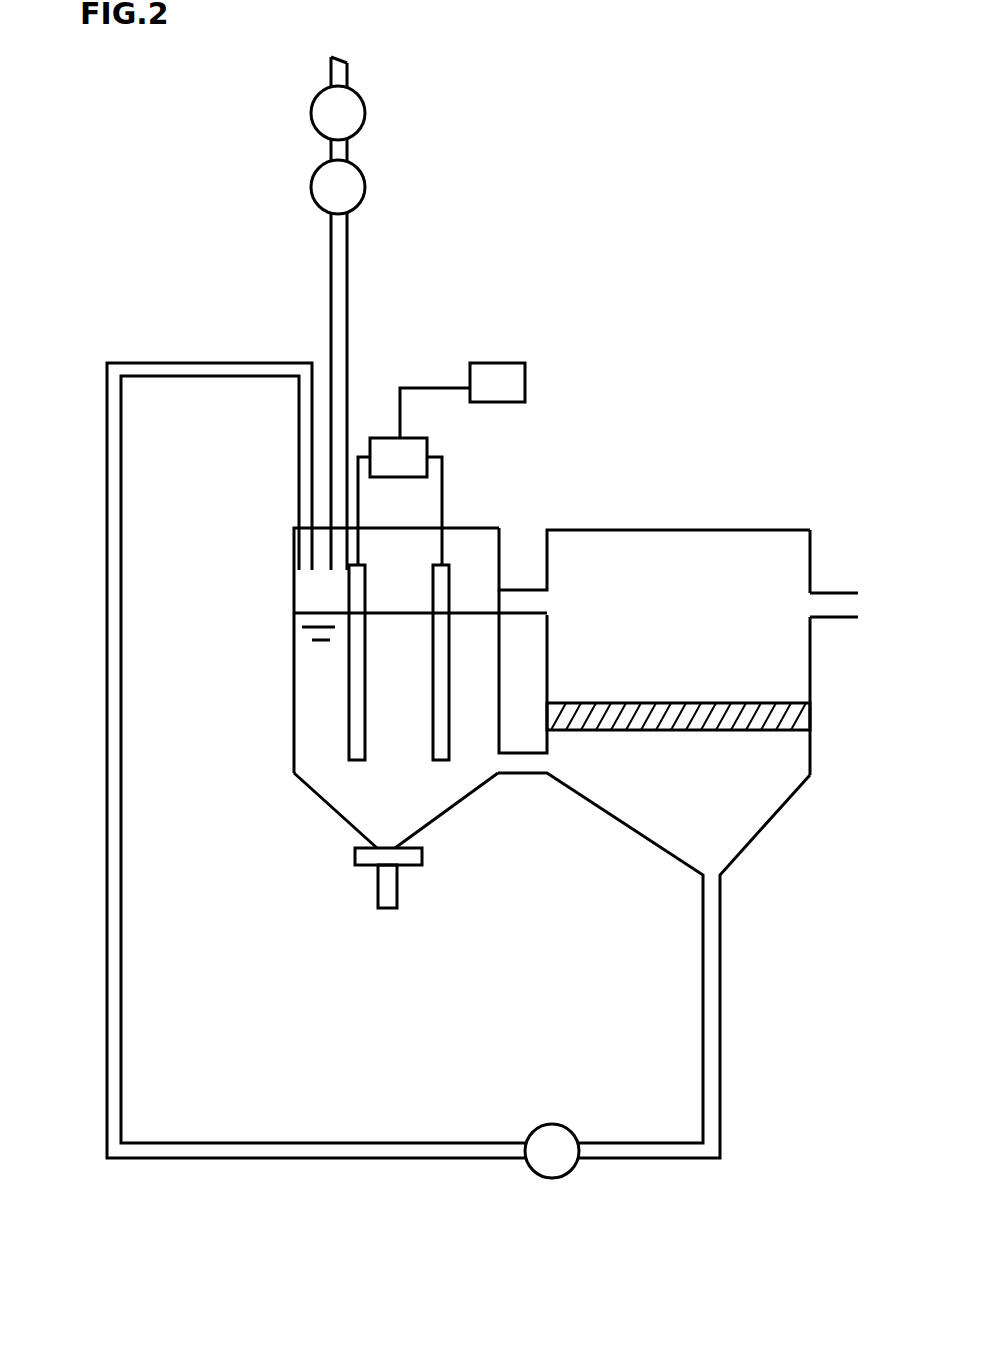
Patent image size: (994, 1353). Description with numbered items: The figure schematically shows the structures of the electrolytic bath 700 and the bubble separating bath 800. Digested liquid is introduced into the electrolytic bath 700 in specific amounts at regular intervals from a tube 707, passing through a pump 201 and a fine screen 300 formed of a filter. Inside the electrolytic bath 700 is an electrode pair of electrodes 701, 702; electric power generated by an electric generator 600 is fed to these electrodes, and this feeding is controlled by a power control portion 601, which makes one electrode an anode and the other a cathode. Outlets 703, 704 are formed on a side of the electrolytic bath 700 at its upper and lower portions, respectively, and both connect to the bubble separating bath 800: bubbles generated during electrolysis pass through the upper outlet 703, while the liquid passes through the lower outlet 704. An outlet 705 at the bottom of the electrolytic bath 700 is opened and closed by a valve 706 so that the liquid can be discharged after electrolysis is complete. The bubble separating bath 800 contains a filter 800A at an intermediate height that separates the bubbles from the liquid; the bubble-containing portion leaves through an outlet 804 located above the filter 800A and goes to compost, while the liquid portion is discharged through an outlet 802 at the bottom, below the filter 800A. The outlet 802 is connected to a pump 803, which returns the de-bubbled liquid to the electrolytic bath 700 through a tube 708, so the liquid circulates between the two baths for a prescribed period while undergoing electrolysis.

The pump 201 is at (366, 113).
The fine screen 300 is at (366, 187).
The tube 707 is at (340, 246).
The tube 708 is at (299, 437).
The electric generator 600 is at (382, 438).
The power control portion 601 is at (500, 363).
The electrolytic bath 700 is at (294, 684).
The electrode 701 is at (349, 733).
The electrode 702 is at (450, 643).
The outlet 703 is at (527, 590).
The outlet 704 is at (517, 773).
The outlet 705 is at (398, 893).
The valve 706 is at (424, 857).
The bubble separating bath 800 is at (812, 688).
The filter 800A is at (742, 732).
The outlet 802 is at (722, 921).
The pump 803 is at (552, 1179).
The outlet 804 is at (833, 593).